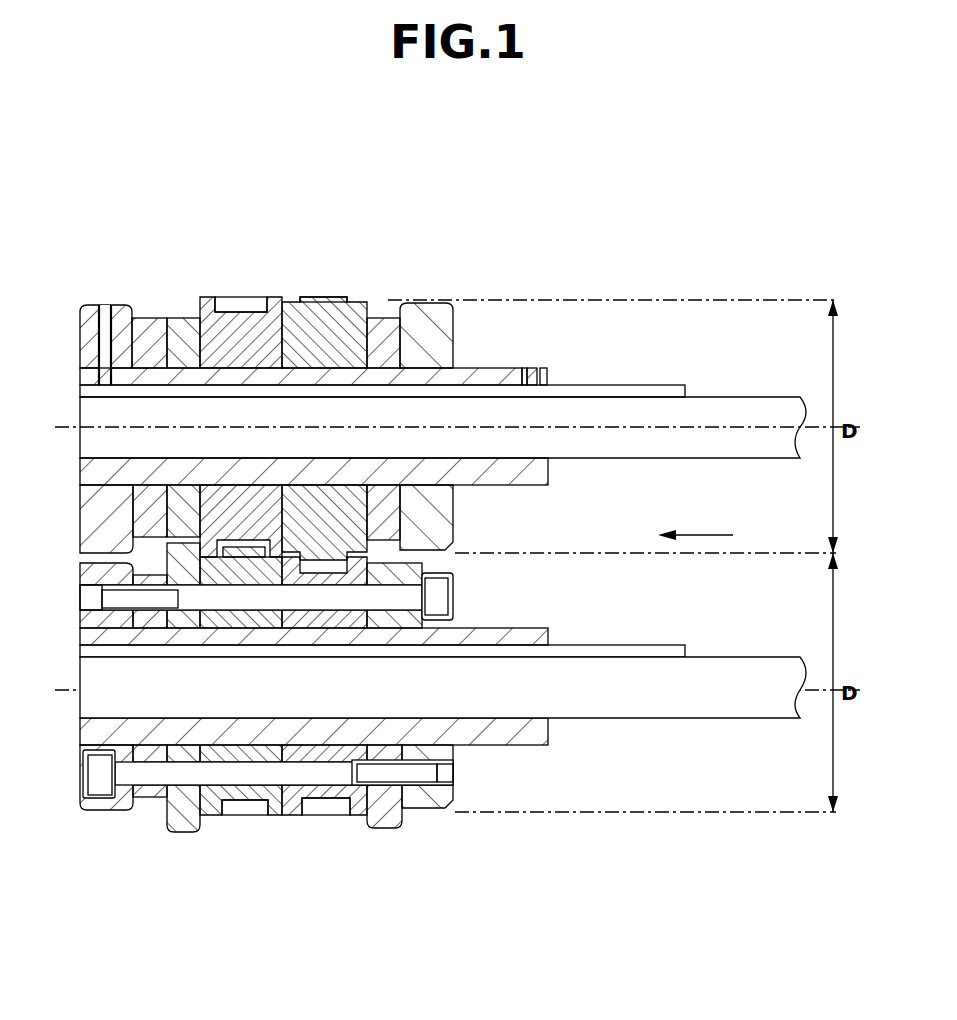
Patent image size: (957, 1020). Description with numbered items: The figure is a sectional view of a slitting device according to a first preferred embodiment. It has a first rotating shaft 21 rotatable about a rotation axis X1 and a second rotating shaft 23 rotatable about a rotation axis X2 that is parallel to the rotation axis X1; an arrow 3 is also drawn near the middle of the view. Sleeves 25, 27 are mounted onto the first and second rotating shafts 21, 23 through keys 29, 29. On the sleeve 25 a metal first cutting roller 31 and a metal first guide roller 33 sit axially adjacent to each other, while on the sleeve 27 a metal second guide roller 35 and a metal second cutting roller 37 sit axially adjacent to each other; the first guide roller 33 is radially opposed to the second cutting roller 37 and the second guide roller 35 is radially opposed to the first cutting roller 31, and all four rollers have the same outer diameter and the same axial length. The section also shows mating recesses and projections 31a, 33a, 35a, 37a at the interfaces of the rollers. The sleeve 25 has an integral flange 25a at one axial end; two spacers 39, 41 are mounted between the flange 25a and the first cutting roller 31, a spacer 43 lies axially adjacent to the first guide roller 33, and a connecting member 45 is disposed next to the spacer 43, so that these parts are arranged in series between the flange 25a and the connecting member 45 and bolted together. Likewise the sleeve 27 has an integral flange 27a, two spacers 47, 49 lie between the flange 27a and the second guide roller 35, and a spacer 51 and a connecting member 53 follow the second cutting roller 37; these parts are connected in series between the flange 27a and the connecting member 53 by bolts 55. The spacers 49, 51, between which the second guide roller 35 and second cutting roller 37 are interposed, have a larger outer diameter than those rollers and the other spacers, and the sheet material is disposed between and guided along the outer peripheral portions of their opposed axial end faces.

The first rotating shaft 21 is at (596, 412).
The second rotating shaft 23 is at (648, 705).
The sleeve 25 is at (488, 378).
The flange 25a is at (86, 323).
The sleeve 27 is at (512, 638).
The flange 27a is at (106, 812).
The key 29 is at (642, 390).
The first cutting roller 31 is at (212, 328).
The recess of first gear 31a is at (242, 308).
The first guide roller 33 is at (357, 323).
The projection of second gear 33a is at (323, 300).
The second guide roller 35 is at (217, 800).
The recess of third gear 35a is at (245, 810).
The second cutting roller 37 is at (362, 792).
The recess of fourth gear 37a is at (330, 805).
The spacer 39 is at (138, 332).
The spacer 41 is at (178, 328).
The spacer 43 is at (380, 332).
The connecting member 45 is at (428, 330).
The spacer 47 is at (153, 800).
The spacer 49 is at (183, 815).
The spacer 51 is at (398, 828).
The connecting member 53 is at (447, 800).
The bolt 55 is at (440, 600).
The rotation axis X1 is at (762, 418).
The rotation axis X2 is at (762, 680).
The viewing direction 3 is at (707, 540).